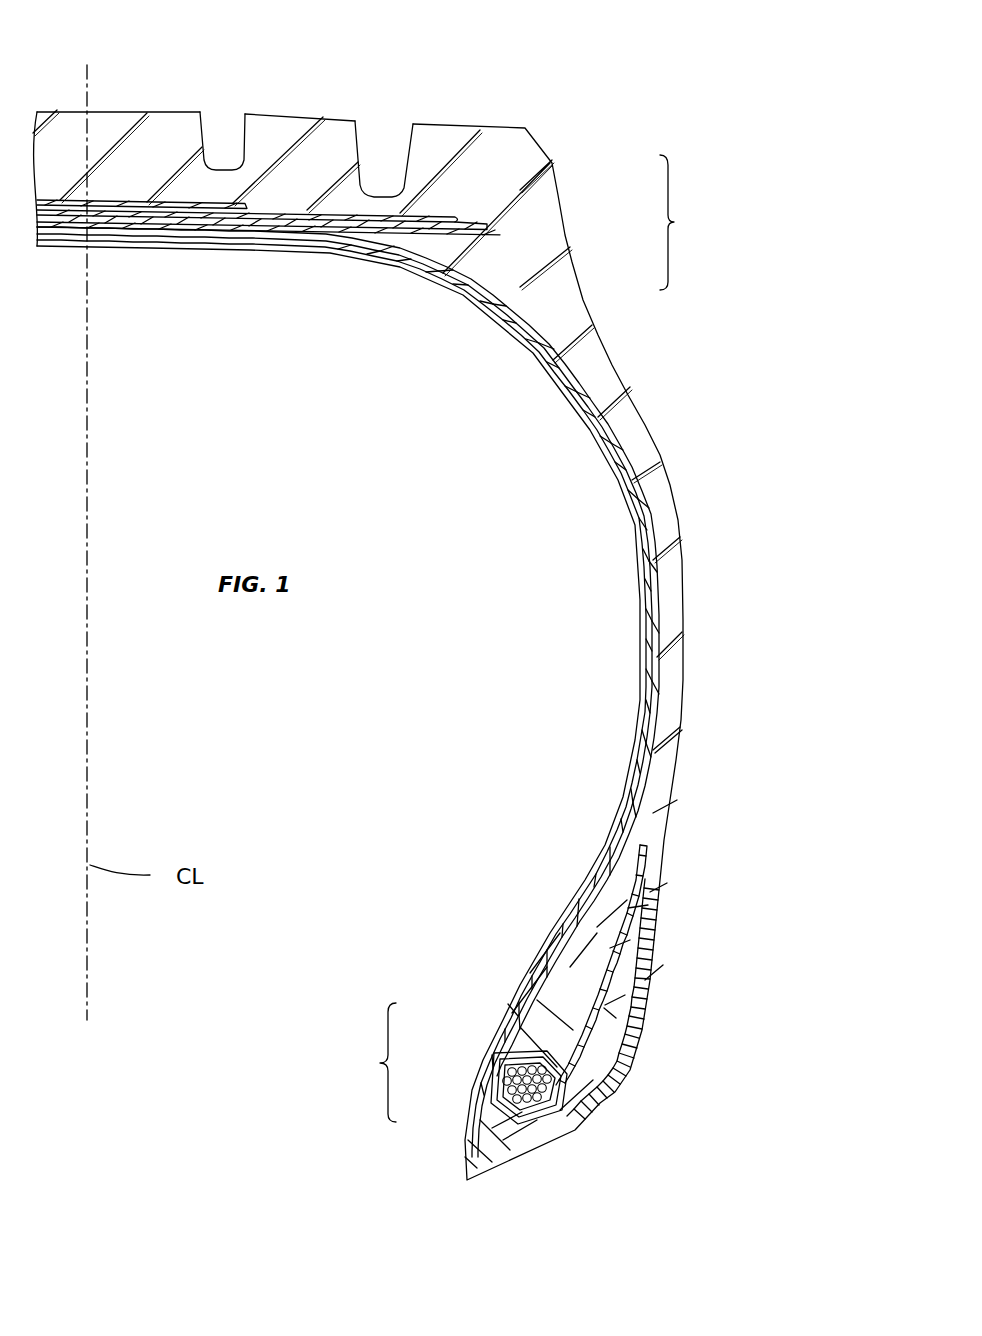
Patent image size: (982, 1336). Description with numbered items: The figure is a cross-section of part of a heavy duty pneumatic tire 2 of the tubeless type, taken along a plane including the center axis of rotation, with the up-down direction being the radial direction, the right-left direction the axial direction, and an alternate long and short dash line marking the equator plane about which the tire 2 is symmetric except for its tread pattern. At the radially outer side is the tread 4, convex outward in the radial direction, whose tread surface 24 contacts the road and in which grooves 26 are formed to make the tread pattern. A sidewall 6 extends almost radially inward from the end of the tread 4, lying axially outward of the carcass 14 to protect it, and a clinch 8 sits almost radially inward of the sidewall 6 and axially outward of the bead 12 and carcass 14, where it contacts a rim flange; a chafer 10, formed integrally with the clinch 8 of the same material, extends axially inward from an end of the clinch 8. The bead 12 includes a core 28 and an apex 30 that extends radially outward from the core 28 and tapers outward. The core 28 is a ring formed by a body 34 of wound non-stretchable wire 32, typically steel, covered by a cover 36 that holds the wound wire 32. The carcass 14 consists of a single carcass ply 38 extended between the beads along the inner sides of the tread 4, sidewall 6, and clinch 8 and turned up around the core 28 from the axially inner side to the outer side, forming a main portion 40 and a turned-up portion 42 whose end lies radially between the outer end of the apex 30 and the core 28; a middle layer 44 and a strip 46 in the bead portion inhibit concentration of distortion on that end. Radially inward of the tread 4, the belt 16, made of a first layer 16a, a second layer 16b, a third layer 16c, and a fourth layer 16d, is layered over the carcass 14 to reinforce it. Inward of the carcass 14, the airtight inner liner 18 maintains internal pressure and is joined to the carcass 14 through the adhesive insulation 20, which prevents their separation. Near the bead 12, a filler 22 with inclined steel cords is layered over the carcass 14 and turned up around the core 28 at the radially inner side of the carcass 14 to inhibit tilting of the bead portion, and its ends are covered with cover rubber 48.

The pneumatic tire 2 is at (586, 85).
The tread 4 is at (276, 128).
The sidewall 6 is at (642, 448).
The clinch 8 is at (632, 972).
The chafer 10 is at (488, 1160).
The bead 12 is at (458, 1063).
The carcass 14 is at (650, 684).
The belt 16 is at (688, 222).
The first layer 16a is at (500, 255).
The second layer 16b is at (490, 233).
The third layer 16c is at (462, 218).
The fourth layer 16d is at (247, 210).
The inner liner 18 is at (645, 597).
The insulation 20 is at (648, 637).
The filler 22 is at (593, 1047).
The tread surface 24 is at (55, 108).
The groove 26 is at (207, 112).
The core 28 is at (487, 1087).
The apex 30 is at (535, 1027).
The wire 32 is at (565, 1110).
The body 34 is at (612, 1139).
The cover 36 is at (573, 1067).
The carcass ply 38 is at (581, 881).
The main portion 40 is at (653, 763).
The turned-up portion 42 is at (617, 998).
The middle layer 44 is at (620, 943).
The strip 46 is at (630, 913).
The cover rubber 48 is at (513, 1010).